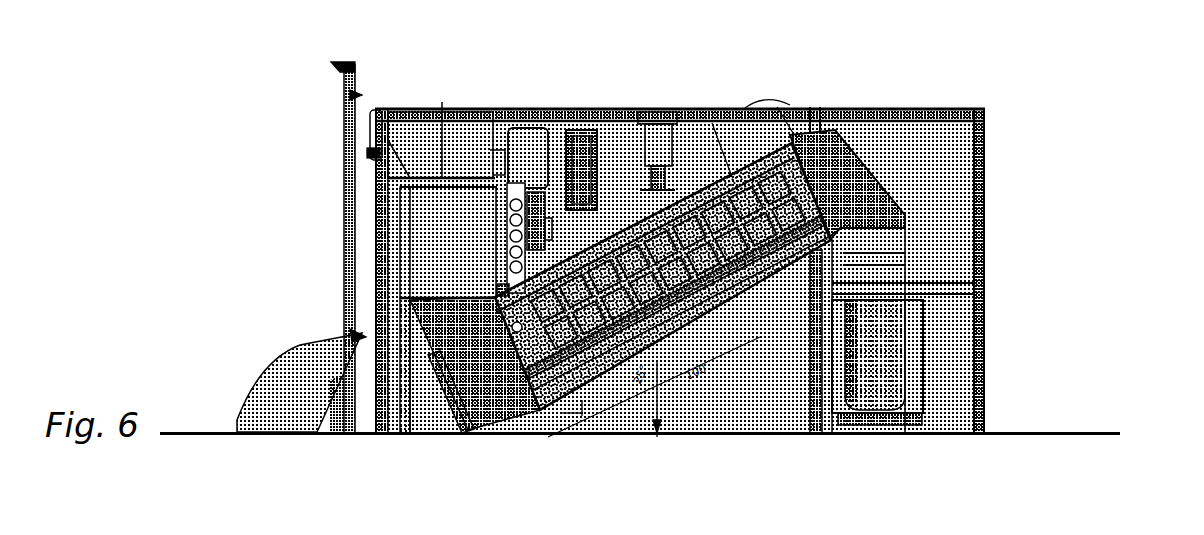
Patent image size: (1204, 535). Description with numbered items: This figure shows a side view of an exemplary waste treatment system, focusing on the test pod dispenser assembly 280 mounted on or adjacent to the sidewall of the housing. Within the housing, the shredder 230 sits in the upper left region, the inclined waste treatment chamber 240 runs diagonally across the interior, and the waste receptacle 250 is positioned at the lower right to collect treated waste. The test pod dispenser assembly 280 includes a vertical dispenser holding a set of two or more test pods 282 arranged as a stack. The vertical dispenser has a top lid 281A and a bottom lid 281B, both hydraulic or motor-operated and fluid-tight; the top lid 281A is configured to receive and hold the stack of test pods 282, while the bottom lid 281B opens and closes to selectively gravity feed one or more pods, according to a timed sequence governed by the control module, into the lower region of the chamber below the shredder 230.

The shredder 230 is at (440, 225).
The test pods 282 is at (505, 242).
The top lid 281A is at (486, 131).
The test pod dispenser assembly 280 is at (530, 172).
The bottom lid 281B is at (510, 290).
The inclined waste treatment chamber 240 is at (649, 311).
The waste receptacle 250 is at (900, 330).